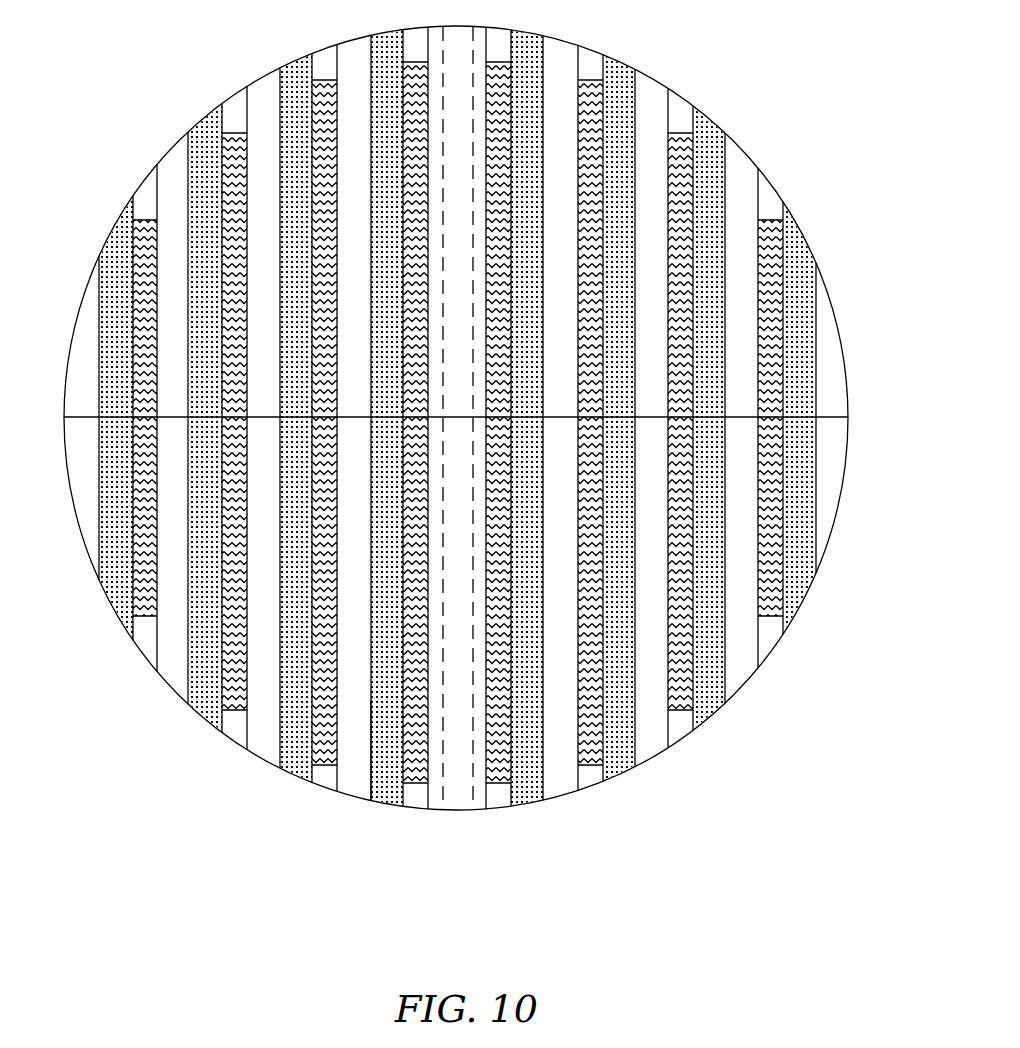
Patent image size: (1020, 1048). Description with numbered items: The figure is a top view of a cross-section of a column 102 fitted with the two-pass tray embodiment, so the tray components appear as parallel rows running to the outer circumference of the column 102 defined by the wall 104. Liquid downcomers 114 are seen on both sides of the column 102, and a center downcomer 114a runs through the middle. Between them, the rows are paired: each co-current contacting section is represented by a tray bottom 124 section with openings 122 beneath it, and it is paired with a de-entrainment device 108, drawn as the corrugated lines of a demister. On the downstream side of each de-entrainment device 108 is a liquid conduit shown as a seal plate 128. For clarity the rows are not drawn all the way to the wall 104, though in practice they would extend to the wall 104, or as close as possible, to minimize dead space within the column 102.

The column 102 is at (143, 100).
The wall 104 is at (834, 517).
The de-entrainment devices 108 is at (772, 598).
The liquid downcomers 114 is at (832, 450).
The center downcomer 114a is at (447, 775).
The openings 122 is at (797, 583).
The tray bottom 124 is at (393, 795).
The seal plates 128 is at (661, 742).